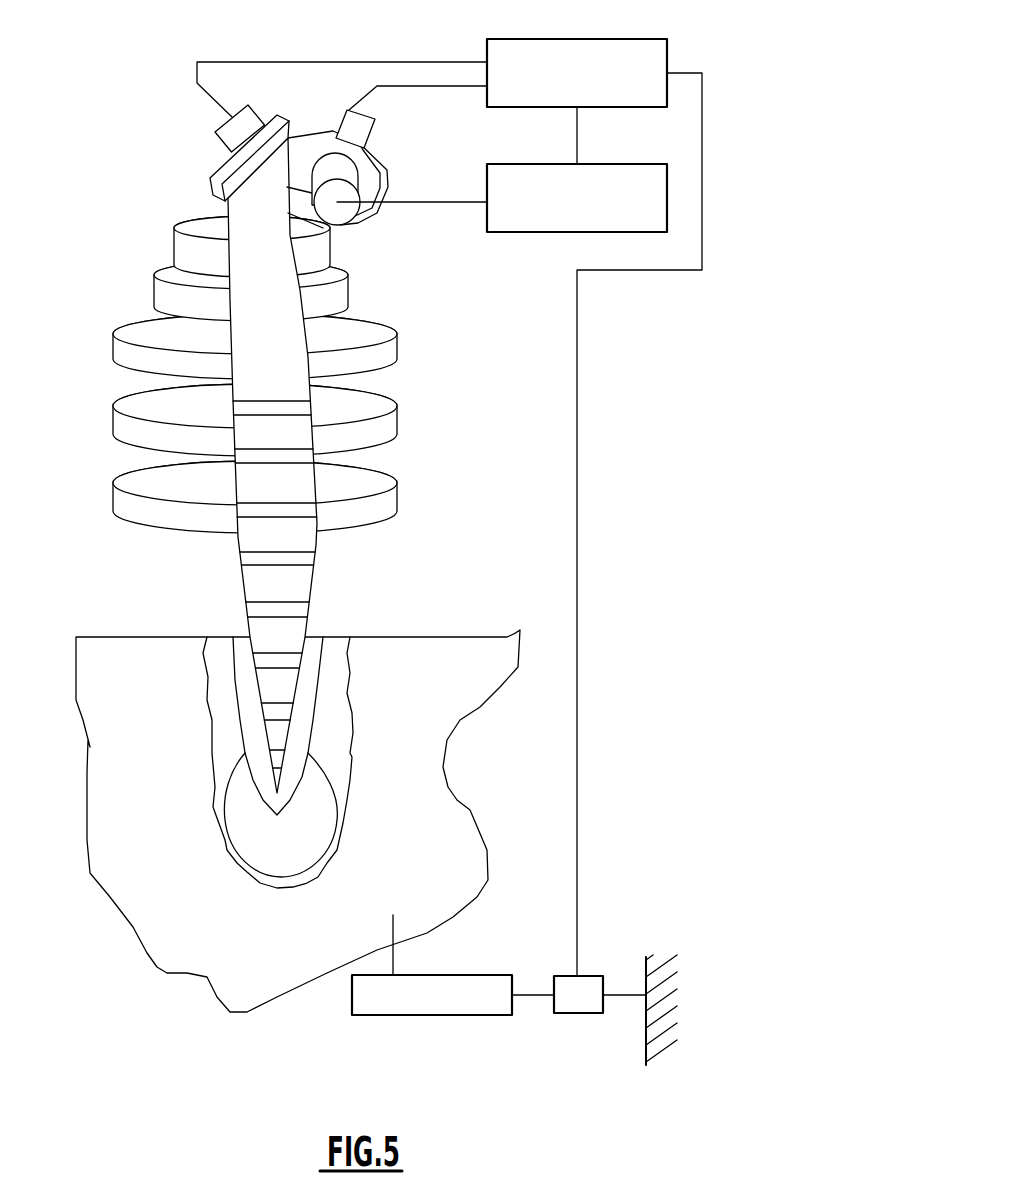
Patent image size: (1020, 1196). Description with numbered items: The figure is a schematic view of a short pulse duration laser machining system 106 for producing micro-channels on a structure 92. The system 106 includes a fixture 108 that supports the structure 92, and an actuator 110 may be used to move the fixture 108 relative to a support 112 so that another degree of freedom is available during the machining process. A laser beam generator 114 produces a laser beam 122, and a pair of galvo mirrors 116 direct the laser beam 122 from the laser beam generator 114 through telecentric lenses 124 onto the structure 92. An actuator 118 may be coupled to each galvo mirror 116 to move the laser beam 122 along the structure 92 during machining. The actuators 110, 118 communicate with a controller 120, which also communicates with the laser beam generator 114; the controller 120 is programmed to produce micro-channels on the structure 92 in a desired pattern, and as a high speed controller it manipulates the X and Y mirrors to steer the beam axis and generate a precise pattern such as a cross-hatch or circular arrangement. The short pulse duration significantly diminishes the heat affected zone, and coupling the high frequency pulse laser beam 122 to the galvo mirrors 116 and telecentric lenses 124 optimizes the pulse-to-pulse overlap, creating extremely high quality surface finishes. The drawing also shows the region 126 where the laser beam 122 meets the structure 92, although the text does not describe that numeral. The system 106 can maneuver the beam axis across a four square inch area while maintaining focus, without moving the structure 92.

The structure 92 is at (462, 720).
The short pulse duration laser machining system 106 is at (118, 143).
The fixture 108 is at (417, 1015).
The actuator 110 is at (577, 1013).
The support 112 is at (646, 1055).
The laser beam generator 114 is at (542, 233).
The galvo mirror 116 is at (378, 167).
The actuator 118 is at (265, 116).
The controller 120 is at (529, 39).
The laser beam 122 is at (308, 535).
The telecentric lenses 124 is at (322, 248).
The keyhole 126 is at (320, 830).